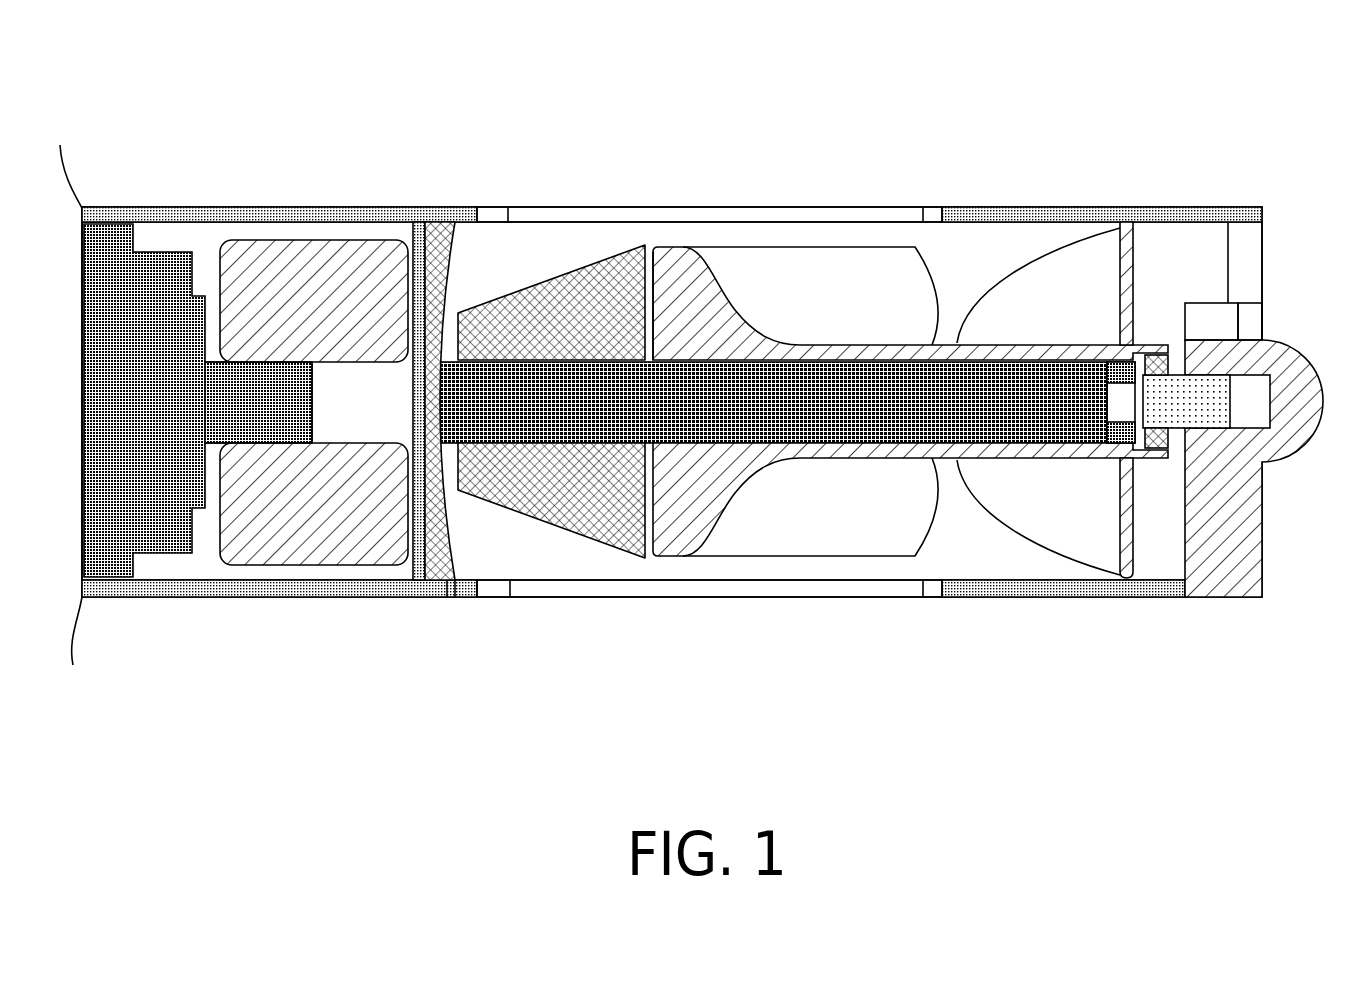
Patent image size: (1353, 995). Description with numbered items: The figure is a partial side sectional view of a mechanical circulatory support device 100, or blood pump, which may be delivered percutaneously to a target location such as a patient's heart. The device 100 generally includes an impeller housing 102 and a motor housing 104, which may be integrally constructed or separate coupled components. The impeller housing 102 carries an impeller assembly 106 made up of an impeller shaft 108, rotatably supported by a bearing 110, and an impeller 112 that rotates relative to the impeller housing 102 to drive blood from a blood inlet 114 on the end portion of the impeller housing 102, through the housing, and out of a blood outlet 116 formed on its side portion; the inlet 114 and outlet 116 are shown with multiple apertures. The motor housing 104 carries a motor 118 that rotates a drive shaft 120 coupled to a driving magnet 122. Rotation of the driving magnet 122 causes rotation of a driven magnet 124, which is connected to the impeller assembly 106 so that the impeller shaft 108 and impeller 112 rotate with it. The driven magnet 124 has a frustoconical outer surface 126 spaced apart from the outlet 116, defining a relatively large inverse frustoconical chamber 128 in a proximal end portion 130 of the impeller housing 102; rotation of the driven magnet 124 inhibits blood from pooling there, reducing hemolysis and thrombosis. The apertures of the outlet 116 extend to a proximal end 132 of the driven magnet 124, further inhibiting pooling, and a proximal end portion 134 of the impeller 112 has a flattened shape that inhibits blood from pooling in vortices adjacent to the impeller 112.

The mechanical circulatory support device 100 is at (188, 115).
The impeller housing 102 is at (1158, 207).
The motor housing 104 is at (327, 207).
The impeller assembly 106 is at (727, 300).
The impeller shaft 108 is at (798, 360).
The bearing 110 is at (440, 225).
The impeller 112 is at (878, 343).
The blood inlet 114 is at (1262, 272).
The blood outlet 116 is at (563, 207).
The motor 118 is at (168, 250).
The drive shaft 120 is at (255, 362).
The driving magnet 122 is at (376, 240).
The driven magnet 124 is at (530, 285).
The frustoconical outer surface 126 is at (609, 250).
The inverse frustoconical chamber 128 is at (491, 227).
The proximal end portion of the impeller housing 130 is at (458, 597).
The proximal end of the driven magnet 132 is at (467, 490).
The proximal end portion of the impeller 134 is at (668, 245).